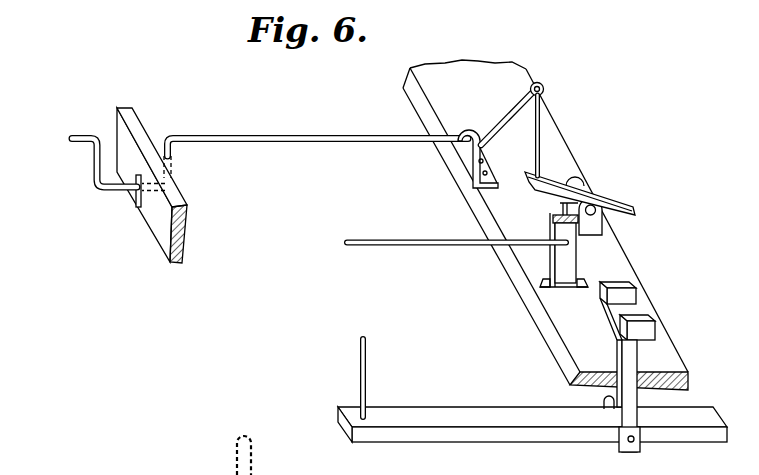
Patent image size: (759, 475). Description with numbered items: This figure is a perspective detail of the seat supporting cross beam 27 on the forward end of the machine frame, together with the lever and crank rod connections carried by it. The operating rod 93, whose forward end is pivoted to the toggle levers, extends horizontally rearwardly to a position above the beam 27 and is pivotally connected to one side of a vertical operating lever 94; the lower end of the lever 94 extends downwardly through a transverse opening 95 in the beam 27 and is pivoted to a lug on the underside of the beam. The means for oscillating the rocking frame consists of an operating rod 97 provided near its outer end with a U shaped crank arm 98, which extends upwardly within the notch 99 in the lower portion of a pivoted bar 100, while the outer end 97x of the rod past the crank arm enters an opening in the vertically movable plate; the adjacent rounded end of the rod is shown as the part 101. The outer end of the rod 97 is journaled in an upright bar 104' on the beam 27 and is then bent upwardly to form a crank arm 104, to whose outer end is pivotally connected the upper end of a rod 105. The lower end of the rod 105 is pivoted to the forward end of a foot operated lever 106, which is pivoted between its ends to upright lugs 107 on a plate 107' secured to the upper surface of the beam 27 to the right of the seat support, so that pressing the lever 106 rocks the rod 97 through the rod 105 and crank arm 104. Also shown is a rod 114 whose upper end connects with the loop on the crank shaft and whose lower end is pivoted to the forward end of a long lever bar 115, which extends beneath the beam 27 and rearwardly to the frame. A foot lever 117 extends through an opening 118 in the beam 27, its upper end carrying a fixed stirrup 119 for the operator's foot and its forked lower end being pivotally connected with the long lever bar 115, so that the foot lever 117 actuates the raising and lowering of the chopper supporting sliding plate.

The beam 27 is at (512, 272).
The operating rod 93 is at (398, 240).
The vertical operating lever 94 is at (572, 257).
The transverse opening 95 is at (543, 285).
The operating rod 97 is at (305, 142).
The outer end of the rod 97x is at (78, 144).
The U shaped crank arm 98 is at (166, 156).
The notch 99 is at (129, 258).
The pivoted bar 100 is at (186, 234).
The crank end 101 is at (80, 145).
The crank arm 104 is at (503, 114).
The upright bar 104' is at (445, 159).
The rod 105 is at (541, 147).
The foot operated lever 106 is at (623, 186).
The upright lugs 107 is at (629, 216).
The plate 107' is at (540, 244).
The rod 114 is at (366, 382).
The long lever bar 115 is at (498, 432).
The foot lever 117 is at (630, 363).
The opening 118 is at (598, 378).
The stirrup 119 is at (632, 308).